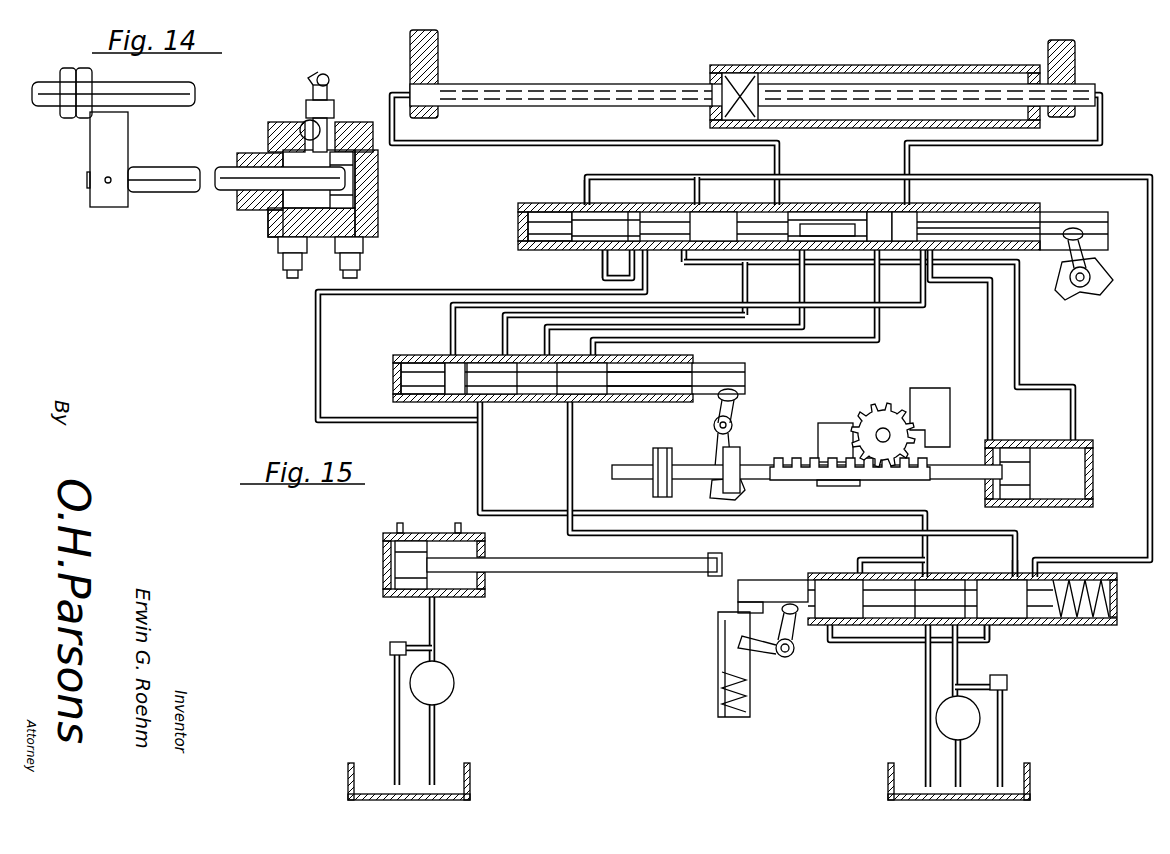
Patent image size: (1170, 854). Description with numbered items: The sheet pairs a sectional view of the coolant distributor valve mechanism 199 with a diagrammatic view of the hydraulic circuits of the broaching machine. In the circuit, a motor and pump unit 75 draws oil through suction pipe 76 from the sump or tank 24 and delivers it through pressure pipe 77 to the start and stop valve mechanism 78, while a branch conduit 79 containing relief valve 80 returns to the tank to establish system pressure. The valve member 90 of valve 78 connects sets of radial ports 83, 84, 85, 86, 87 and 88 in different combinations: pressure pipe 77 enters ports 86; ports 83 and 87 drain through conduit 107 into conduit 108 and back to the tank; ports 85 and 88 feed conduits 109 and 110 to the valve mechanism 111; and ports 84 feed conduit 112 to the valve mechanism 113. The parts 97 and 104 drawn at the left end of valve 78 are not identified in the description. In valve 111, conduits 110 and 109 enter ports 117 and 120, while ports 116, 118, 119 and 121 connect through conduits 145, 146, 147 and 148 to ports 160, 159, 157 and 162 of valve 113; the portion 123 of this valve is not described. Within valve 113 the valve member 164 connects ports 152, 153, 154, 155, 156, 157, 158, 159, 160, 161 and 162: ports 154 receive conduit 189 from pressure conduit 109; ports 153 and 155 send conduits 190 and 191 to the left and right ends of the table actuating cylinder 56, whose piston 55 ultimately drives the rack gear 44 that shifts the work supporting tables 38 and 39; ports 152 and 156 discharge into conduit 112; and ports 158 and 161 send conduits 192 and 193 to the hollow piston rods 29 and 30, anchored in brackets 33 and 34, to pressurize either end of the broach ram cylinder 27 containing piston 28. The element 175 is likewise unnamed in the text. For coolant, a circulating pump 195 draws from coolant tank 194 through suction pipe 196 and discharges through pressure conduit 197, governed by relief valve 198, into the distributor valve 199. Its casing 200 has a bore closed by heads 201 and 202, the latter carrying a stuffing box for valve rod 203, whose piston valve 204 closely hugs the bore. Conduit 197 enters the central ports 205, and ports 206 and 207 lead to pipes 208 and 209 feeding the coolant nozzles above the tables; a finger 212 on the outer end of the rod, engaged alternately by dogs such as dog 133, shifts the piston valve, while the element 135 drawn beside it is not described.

In FIG. 15, the reservoir 24 is at (1032, 782).
In FIG. 15, the broach ram cylinder 27 is at (866, 60).
In FIG. 15, the piston 28 is at (744, 78).
In FIG. 15, the hollow piston rod 29 is at (585, 80).
In FIG. 15, the hollow piston rod 30 is at (921, 83).
In FIG. 15, the arm or bracket 33 is at (438, 47).
In FIG. 15, the arm or bracket 34 is at (1077, 62).
In FIG. 15, the work supporting table 38 is at (932, 390).
In FIG. 15, the work supporting table 39 is at (851, 420).
In FIG. 15, the rack gear 44 is at (896, 400).
In FIG. 15, the piston 55 is at (1010, 448).
In FIG. 15, the cylinder 56 is at (1072, 508).
In FIG. 15, the motor and pump unit 75 is at (947, 722).
In FIG. 15, the suction pipe 76 is at (960, 760).
In FIG. 15, the discharge or pressure pipe 77 is at (958, 663).
In FIG. 15, the start and stop valve mechanism 78 is at (826, 570).
In FIG. 15, the branch pipe or conduit 79 is at (994, 676).
In FIG. 15, the relief valve 80 is at (1008, 682).
In FIG. 15, the radial ports 83 is at (802, 632).
In FIG. 15, the radial ports 84 is at (862, 566).
In FIG. 15, the radial ports 85 is at (930, 565).
In FIG. 15, the radial ports 86 is at (950, 620).
In FIG. 15, the radial ports 87 is at (986, 630).
In FIG. 15, the radial ports 88 is at (1025, 573).
In FIG. 15, the valve member 90 is at (1040, 628).
In FIG. 15, the cam lever 97 is at (783, 660).
In FIG. 15, the bracket 104 is at (722, 655).
In FIG. 15, the pipe or conduit 107 is at (870, 645).
In FIG. 15, the pipe or conduit 108 is at (927, 703).
In FIG. 15, the pipe or conduit 109 is at (784, 512).
In FIG. 15, the pipe or conduit 110 is at (786, 535).
In FIG. 15, the valve mechanism 111 is at (418, 352).
In FIG. 15, the pipe or conduit 112 is at (1150, 393).
In FIG. 15, the valve mechanism 113 is at (552, 200).
In FIG. 15, the port 116 is at (597, 372).
In FIG. 15, the port 117 is at (573, 410).
In FIG. 15, the port 118 is at (548, 356).
In FIG. 15, the port 119 is at (505, 356).
In FIG. 15, the port 120 is at (483, 410).
In FIG. 15, the port 121 is at (460, 356).
In FIG. 15, the chamber 123 is at (440, 371).
In FIG. 14, the dog 133 is at (88, 80).
In FIG. 14, the rod 135 is at (152, 88).
In FIG. 15, the pipe or conduit 145 is at (855, 345).
In FIG. 15, the pipe or conduit 146 is at (804, 325).
In FIG. 15, the pipe or conduit 147 is at (504, 316).
In FIG. 15, the pipe or conduit 148 is at (452, 312).
In FIG. 15, the radial ports 152 is at (596, 204).
In FIG. 15, the radial ports 153 is at (600, 252).
In FIG. 15, the radial ports 154 is at (604, 276).
In FIG. 15, the radial ports 155 is at (668, 253).
In FIG. 15, the radial ports 156 is at (702, 204).
In FIG. 15, the radial ports 157 is at (742, 262).
In FIG. 15, the radial ports 158 is at (786, 204).
In FIG. 15, the radial ports 159 is at (802, 230).
In FIG. 15, the radial ports 160 is at (892, 200).
In FIG. 15, the radial ports 161 is at (912, 208).
In FIG. 15, the radial ports 162 is at (932, 236).
In FIG. 15, the valve member 164 is at (530, 220).
In FIG. 15, the cam follower 175 is at (1070, 298).
In FIG. 15, the pipe or conduit 189 is at (475, 288).
In FIG. 15, the pipe or conduit 190 is at (990, 342).
In FIG. 15, the pipe or conduit 191 is at (1018, 342).
In FIG. 15, the pipe or conduit 192 is at (780, 163).
In FIG. 15, the pipe or conduit 193 is at (1042, 152).
In FIG. 15, the coolant tank 194 is at (471, 778).
In FIG. 15, the circulating pump 195 is at (455, 682).
In FIG. 15, the suction pipe 196 is at (434, 725).
In FIG. 14, the pressure pipe or conduit 197 is at (327, 84).
In FIG. 15, the pressure pipe or conduit 197 is at (435, 625).
In FIG. 15, the relief valve 198 is at (390, 650).
In FIG. 15, the distributor valve mechanism 199 is at (388, 562).
In FIG. 14, the valve casing 200 is at (345, 125).
In FIG. 14, the head 201 is at (350, 181).
In FIG. 14, the head 202 is at (276, 228).
In FIG. 14, the valve rod 203 is at (178, 194).
In FIG. 15, the valve rod 203 is at (556, 566).
In FIG. 14, the piston valve 204 is at (355, 172).
In FIG. 15, the piston valve 204 is at (393, 572).
In FIG. 14, the port 205 is at (302, 125).
In FIG. 14, the port 206 is at (280, 250).
In FIG. 14, the port 207 is at (368, 218).
In FIG. 14, the pipe 208 is at (291, 277).
In FIG. 15, the pipe 208 is at (399, 526).
In FIG. 14, the pipe 209 is at (362, 268).
In FIG. 15, the pipe 209 is at (458, 522).
In FIG. 14, the finger 212 is at (128, 152).